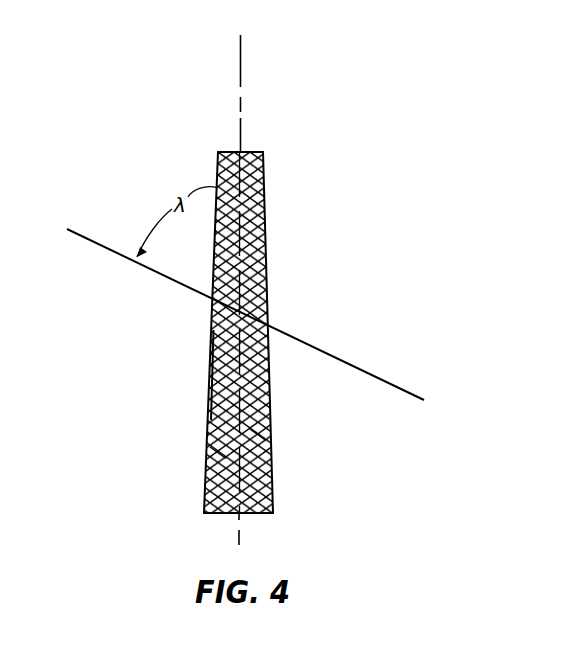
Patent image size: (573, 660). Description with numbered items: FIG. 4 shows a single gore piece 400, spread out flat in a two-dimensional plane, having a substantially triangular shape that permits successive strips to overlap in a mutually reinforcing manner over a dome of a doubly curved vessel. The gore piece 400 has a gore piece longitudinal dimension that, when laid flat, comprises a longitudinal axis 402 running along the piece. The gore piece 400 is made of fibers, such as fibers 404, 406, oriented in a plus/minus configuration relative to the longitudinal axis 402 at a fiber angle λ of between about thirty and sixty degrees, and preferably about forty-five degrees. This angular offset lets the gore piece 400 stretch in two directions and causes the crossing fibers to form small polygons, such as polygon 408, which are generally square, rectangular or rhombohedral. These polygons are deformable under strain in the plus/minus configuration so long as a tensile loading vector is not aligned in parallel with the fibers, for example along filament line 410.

The gore piece 400 is at (268, 242).
The longitudinal axis 402 is at (241, 65).
The fiber 404 is at (210, 377).
The fiber 406 is at (217, 452).
The polygon 408 is at (253, 434).
The filament line 410 is at (92, 238).